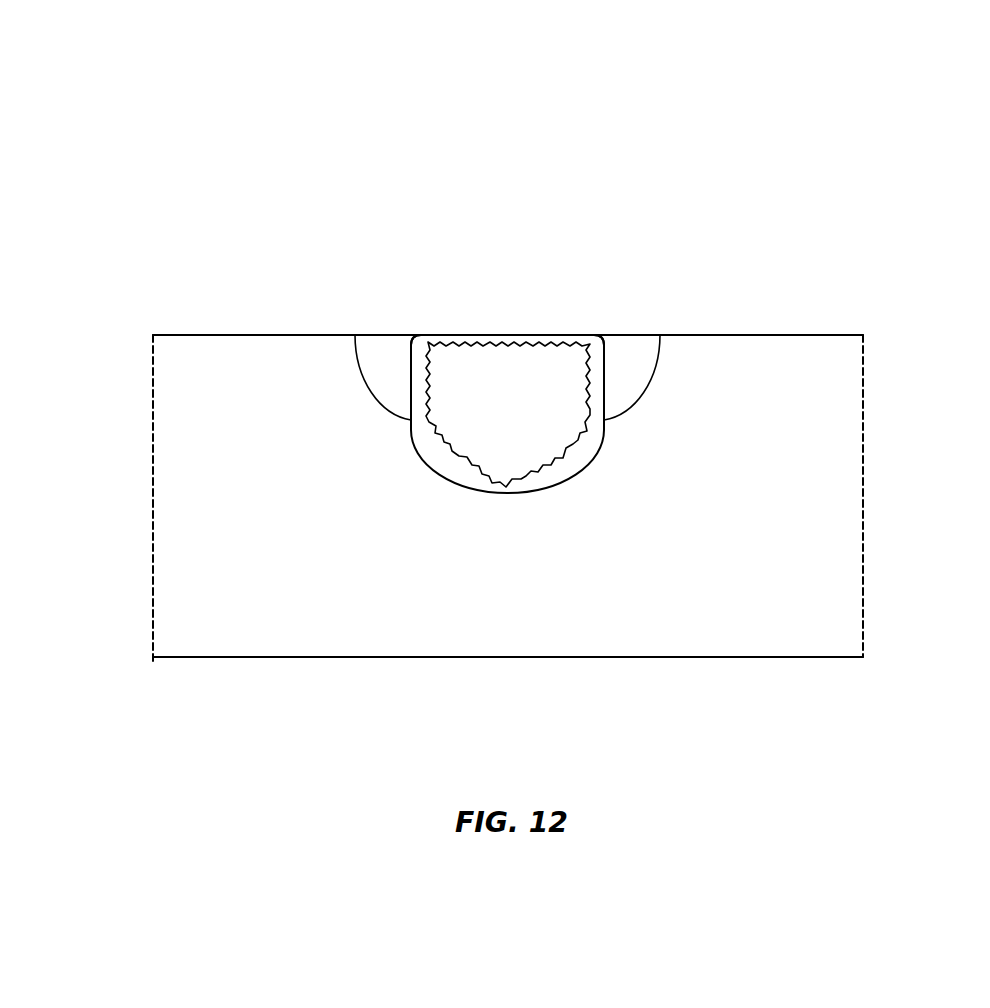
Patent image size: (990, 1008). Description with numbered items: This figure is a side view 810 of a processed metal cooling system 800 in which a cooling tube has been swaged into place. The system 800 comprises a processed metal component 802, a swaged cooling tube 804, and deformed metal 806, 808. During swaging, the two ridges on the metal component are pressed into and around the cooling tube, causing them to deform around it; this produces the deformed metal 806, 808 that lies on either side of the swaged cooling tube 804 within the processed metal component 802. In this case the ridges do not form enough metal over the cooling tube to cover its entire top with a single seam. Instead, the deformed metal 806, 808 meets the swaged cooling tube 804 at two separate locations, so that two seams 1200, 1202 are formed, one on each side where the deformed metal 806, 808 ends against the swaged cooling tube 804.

The processed metal cooling system 800 is at (835, 147).
The processed metal component 802 is at (865, 362).
The swaged cooling tube 804 is at (478, 478).
The deformed metal 806 is at (395, 360).
The deformed metal 808 is at (622, 357).
The side view 810 is at (753, 565).
The seam 1200 is at (421, 335).
The seam 1202 is at (592, 335).